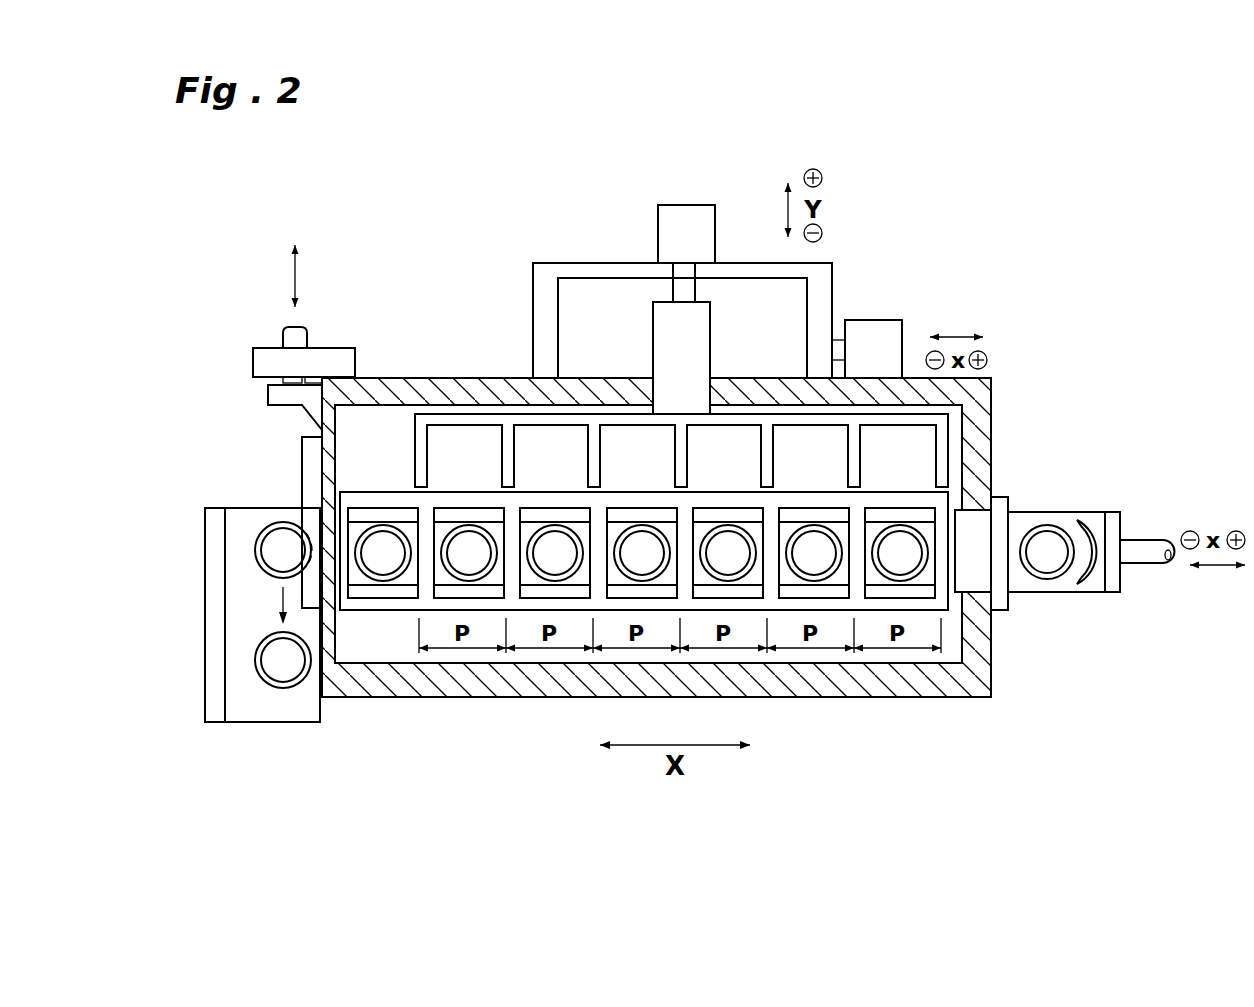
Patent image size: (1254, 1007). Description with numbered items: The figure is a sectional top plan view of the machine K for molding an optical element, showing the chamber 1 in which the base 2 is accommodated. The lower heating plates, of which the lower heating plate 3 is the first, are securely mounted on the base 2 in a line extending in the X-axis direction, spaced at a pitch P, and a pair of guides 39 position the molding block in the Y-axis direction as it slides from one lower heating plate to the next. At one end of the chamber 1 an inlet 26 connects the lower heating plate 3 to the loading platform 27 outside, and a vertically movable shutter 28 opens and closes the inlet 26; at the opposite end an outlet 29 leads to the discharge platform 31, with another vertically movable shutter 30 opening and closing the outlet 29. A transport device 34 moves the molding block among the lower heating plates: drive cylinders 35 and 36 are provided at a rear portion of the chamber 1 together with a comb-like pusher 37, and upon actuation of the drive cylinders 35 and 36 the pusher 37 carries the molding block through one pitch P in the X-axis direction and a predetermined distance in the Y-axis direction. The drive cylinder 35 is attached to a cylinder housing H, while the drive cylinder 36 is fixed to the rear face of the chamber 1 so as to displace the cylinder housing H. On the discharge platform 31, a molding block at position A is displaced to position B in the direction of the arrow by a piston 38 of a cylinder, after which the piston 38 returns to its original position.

The chamber 1 is at (977, 383).
The base 2 is at (644, 533).
The lower heating plate 3 is at (875, 530).
The inlet 26 is at (978, 570).
The loading platform 27 is at (1072, 582).
The shutter 28 is at (1002, 505).
The outlet 29 is at (325, 492).
The shutter 30 is at (308, 455).
The discharge platform 31 is at (225, 652).
The transport device 34 is at (738, 281).
The drive cylinder 35 is at (692, 217).
The drive cylinder 36 is at (890, 335).
The pusher 37 is at (940, 448).
The piston 38 is at (305, 335).
The guides 39 is at (385, 512).
The cylinder housing H is at (548, 273).
The machine K is at (778, 119).
The position A is at (277, 546).
The position B is at (288, 670).